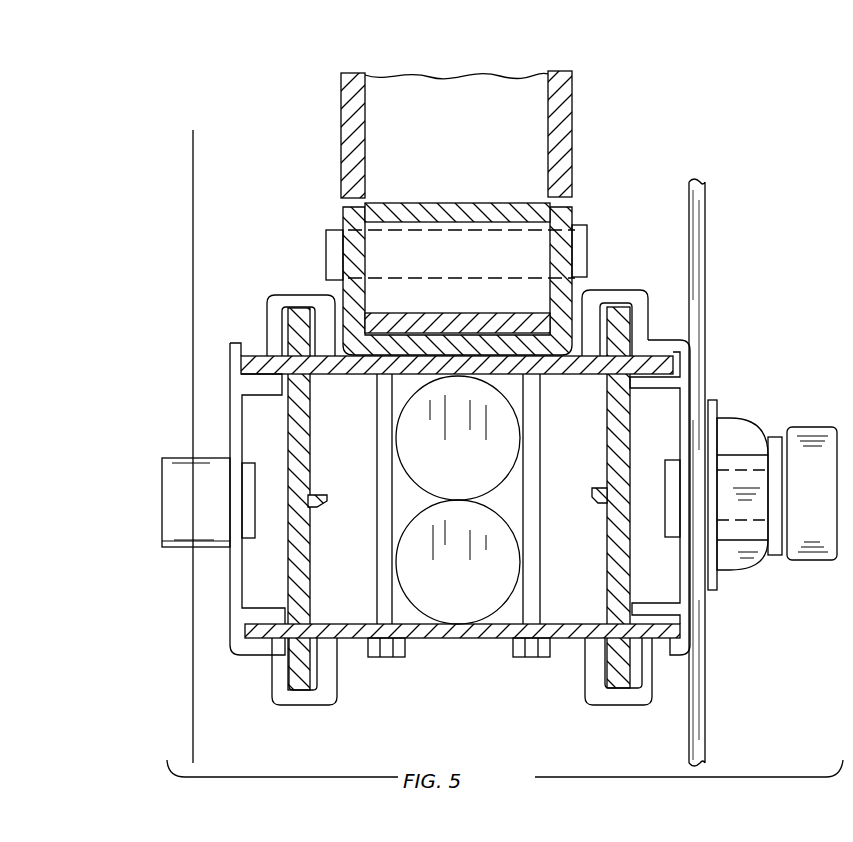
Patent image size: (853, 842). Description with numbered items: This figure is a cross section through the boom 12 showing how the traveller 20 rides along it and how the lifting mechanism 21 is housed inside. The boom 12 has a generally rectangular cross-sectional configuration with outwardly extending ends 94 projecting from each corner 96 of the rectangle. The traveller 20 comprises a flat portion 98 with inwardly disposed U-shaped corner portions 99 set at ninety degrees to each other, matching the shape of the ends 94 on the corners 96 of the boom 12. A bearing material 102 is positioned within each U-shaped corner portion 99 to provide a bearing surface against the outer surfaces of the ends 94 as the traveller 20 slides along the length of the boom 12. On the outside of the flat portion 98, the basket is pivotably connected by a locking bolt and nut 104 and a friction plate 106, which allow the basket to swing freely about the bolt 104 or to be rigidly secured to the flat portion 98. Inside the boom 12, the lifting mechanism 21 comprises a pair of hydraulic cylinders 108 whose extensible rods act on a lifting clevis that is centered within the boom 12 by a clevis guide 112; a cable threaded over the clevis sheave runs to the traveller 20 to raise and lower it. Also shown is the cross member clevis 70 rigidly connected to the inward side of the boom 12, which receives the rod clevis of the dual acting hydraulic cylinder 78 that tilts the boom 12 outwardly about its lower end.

The dual acting hydraulic cylinder 78 is at (572, 95).
The cross member clevis 70 is at (578, 212).
The boom 12 is at (617, 305).
The outwardly extending ends 94 is at (294, 334).
The corners 96 is at (293, 364).
The U-shaped corner portions 99 is at (240, 352).
The bearing material 102 is at (282, 386).
The traveller 20 is at (254, 424).
The flat portion 98 is at (240, 597).
The locking bolt and nut 104 is at (400, 648).
The friction plate 106 is at (726, 420).
The lifting mechanism 21 is at (615, 460).
The hydraulic cylinders 108 is at (478, 447).
The clevis guide 112 is at (316, 496).